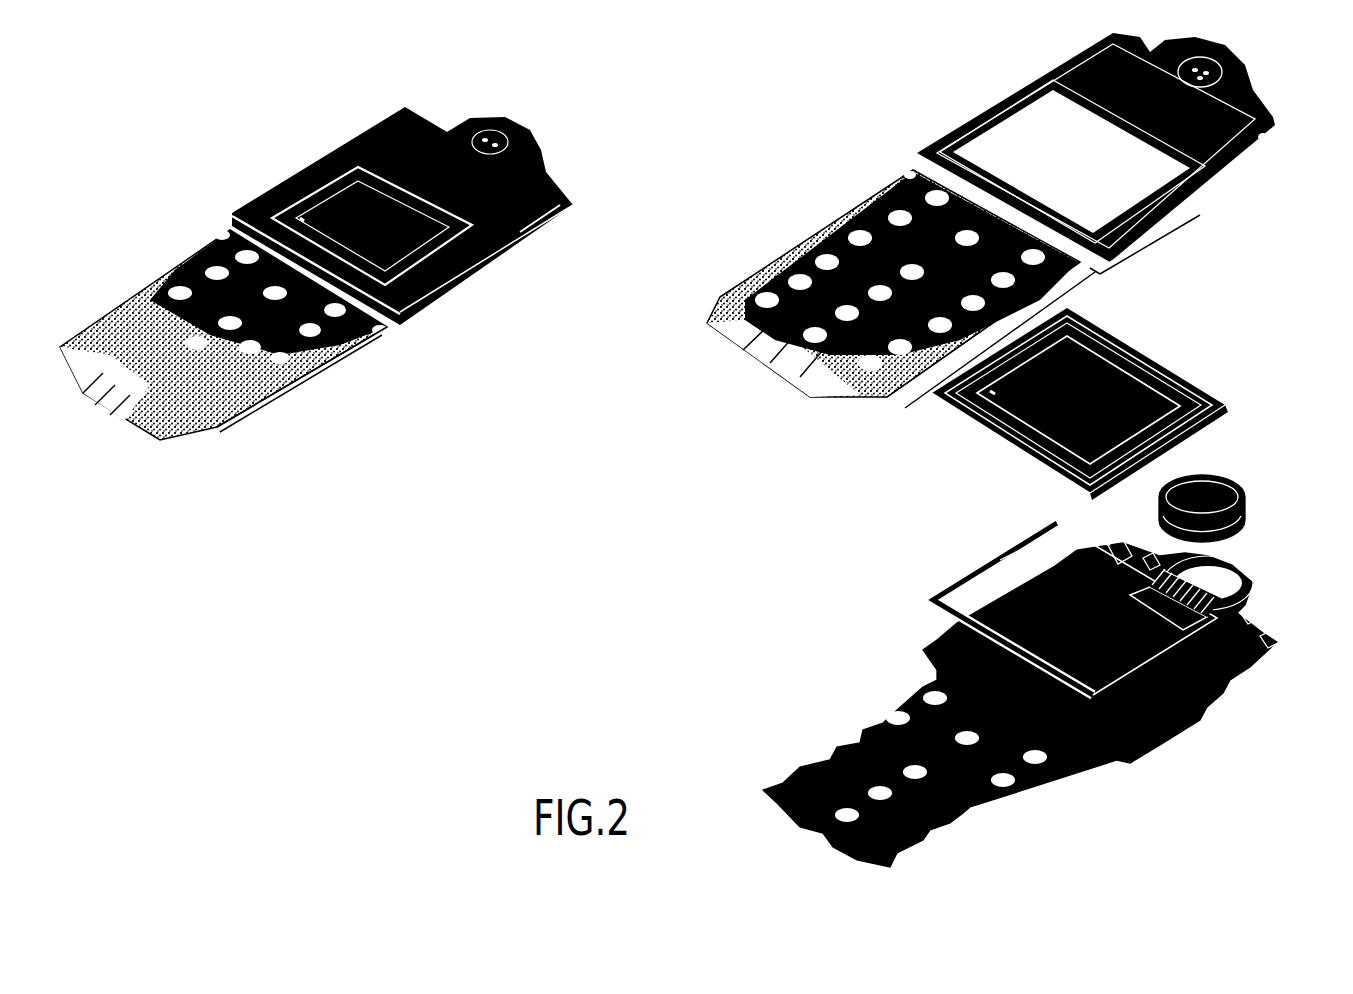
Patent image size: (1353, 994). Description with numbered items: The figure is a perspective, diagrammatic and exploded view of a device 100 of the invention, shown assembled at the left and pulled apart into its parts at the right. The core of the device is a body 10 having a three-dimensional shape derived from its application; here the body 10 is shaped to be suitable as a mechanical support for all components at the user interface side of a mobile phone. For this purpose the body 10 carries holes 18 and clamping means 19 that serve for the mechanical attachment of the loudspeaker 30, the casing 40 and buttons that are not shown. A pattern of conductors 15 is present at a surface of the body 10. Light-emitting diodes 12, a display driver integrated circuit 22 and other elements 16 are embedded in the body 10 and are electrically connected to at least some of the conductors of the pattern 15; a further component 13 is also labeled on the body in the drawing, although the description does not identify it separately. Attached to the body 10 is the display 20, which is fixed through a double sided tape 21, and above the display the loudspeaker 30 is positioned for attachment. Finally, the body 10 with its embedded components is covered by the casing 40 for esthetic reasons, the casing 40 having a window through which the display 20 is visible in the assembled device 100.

The mobile terminal device 100 is at (160, 136).
The casing 40 is at (830, 226).
The display 20 is at (990, 447).
The loudspeaker 30 is at (1252, 492).
The body 10 is at (860, 737).
The light-emitting diodes 12 is at (1108, 546).
The integrated circuit chip 13 is at (1223, 590).
The pattern of conductors 15 is at (1130, 567).
The other elements 16 is at (1150, 560).
The holes 18 is at (1032, 760).
The clamping means 19 is at (1235, 556).
The double sided tape 21 is at (928, 600).
The display driver integrated circuit 22 is at (1143, 610).